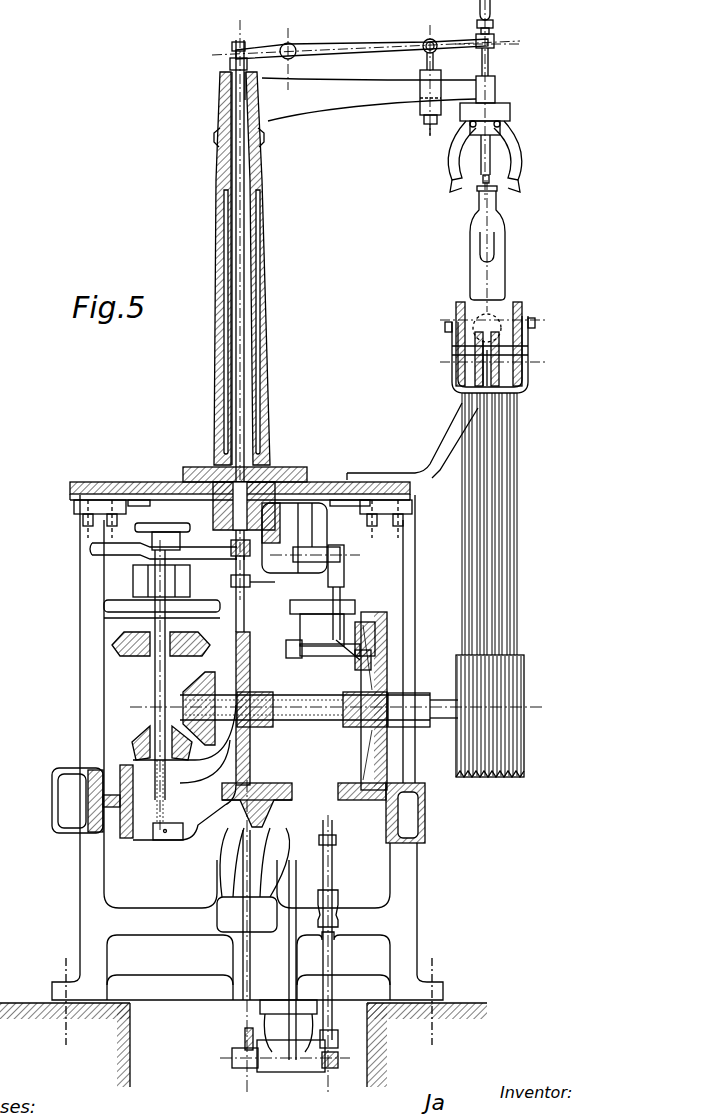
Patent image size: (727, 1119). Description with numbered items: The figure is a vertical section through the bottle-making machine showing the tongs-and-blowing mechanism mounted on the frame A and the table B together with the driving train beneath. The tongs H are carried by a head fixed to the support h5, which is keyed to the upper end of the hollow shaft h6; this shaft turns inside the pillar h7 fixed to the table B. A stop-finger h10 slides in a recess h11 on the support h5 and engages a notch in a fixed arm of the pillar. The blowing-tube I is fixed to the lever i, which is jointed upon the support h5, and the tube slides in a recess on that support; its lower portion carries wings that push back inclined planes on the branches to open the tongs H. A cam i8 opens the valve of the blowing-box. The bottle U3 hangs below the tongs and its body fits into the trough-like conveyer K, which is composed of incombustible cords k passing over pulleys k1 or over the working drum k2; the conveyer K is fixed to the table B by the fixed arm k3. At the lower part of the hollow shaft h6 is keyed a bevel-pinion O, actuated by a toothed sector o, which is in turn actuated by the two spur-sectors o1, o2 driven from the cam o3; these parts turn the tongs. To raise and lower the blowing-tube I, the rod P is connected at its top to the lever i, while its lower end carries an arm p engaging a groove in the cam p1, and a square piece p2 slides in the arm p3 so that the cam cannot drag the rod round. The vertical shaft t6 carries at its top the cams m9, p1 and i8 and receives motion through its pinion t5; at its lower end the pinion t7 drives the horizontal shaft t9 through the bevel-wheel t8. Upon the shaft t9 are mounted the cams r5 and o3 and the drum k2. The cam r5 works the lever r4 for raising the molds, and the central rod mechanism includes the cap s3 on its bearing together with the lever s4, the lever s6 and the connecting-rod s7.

The frame A is at (243, 791).
The table B is at (115, 482).
The rod P is at (246, 402).
The support h5 is at (378, 98).
The hollow shaft h6 is at (248, 312).
The pillar h7 is at (262, 356).
The stop-finger h10 is at (420, 135).
The recess h11 is at (414, 92).
The lever i is at (347, 50).
The cam i8 is at (162, 527).
The blowing-tube I is at (494, 72).
The tongs H is at (510, 126).
The bottle U3 is at (487, 246).
The conveyer K is at (530, 357).
The cords k is at (478, 492).
The pulleys k1 is at (526, 314).
The working drum k2 is at (490, 716).
The fixed arm k3 is at (420, 468).
The bevel-pinion O is at (232, 522).
The toothed sector o is at (294, 538).
The spur-sector o1 is at (320, 562).
The spur-sector o2 is at (341, 583).
The cam o3 is at (330, 629).
The arm p is at (241, 586).
The cam p1 is at (92, 551).
The square piece p2 is at (238, 592).
The arm p3 is at (258, 592).
The cam m9 is at (162, 593).
The pinion t5 is at (161, 653).
The vertical shaft t6 is at (158, 692).
The pinion t7 is at (140, 740).
The bevel-wheel t8 is at (208, 705).
The horizontal shaft t9 is at (292, 713).
The lever r4 is at (286, 806).
The cam r5 is at (252, 755).
The cap s3 is at (372, 809).
The lever s4 is at (244, 1040).
The lever s6 is at (344, 1050).
The connecting-rod s7 is at (335, 871).